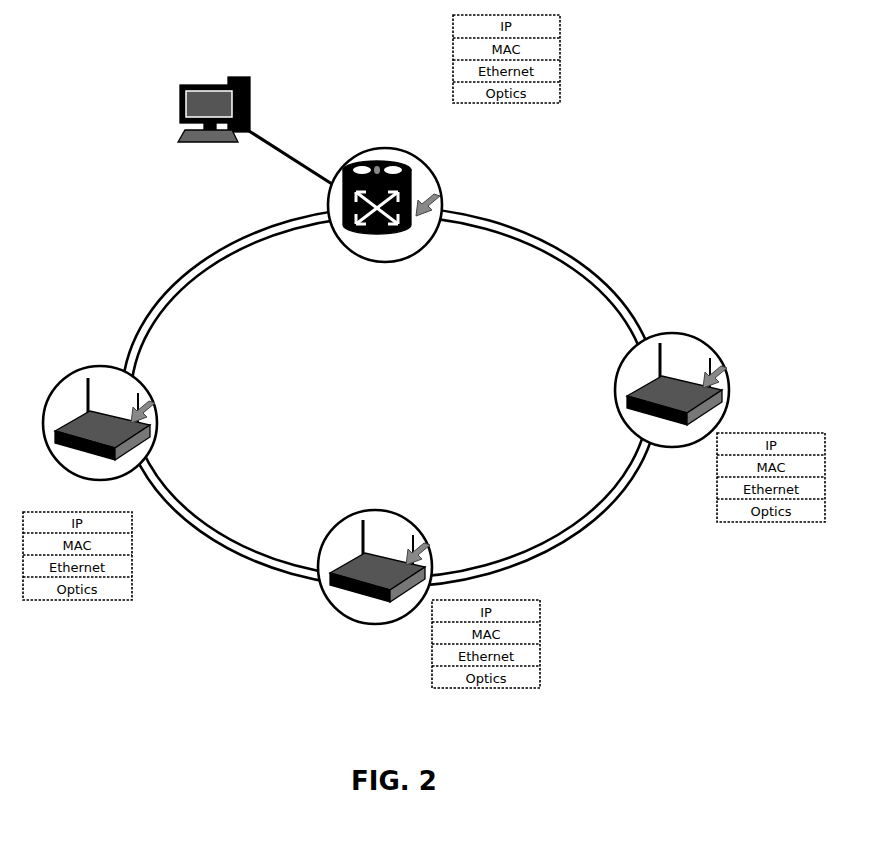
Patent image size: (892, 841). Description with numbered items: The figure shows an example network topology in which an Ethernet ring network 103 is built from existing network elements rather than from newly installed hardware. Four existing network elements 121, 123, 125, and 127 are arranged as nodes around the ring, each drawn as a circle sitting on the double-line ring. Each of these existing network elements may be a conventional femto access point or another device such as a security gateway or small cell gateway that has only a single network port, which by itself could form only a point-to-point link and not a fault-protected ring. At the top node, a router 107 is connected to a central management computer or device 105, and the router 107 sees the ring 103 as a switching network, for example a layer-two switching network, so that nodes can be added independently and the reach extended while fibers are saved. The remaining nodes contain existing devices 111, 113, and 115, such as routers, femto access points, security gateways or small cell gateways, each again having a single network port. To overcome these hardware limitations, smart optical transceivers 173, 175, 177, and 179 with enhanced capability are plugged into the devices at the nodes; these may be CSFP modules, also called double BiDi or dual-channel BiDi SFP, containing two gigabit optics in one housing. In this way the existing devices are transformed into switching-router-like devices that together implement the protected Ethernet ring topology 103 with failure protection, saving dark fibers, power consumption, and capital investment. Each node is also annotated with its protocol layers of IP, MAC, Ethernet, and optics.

The Ethernet ring network 103 is at (568, 252).
The central management computer or device 105 is at (190, 141).
The router 107 is at (378, 162).
The existing device 111 is at (340, 592).
The existing device 113 is at (87, 452).
The existing device 115 is at (672, 370).
The existing network element 121 is at (95, 367).
The existing network element 123 is at (385, 148).
The existing network element 125 is at (673, 333).
The existing network element 127 is at (385, 510).
The smart optical transceiver 173 is at (143, 403).
The smart optical transceiver 175 is at (418, 552).
The smart optical transceiver 177 is at (712, 366).
The smart optical transceiver 179 is at (424, 188).